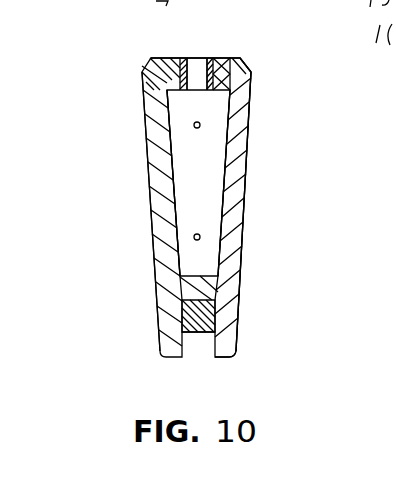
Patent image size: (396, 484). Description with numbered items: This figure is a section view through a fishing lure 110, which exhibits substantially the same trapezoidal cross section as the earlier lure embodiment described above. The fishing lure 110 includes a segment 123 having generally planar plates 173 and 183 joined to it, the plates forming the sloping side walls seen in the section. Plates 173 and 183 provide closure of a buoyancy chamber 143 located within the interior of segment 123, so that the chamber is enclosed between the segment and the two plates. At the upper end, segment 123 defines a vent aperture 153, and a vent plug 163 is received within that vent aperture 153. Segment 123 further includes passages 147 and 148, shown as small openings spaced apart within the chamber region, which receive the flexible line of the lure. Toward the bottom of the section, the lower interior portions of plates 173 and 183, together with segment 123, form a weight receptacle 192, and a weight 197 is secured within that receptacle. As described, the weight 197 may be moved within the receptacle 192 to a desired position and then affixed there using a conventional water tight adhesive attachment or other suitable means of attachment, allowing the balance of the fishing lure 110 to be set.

The fishing lure 110 is at (118, 220).
The segment 123 is at (250, 98).
The buoyancy chamber 143 is at (205, 160).
The passage 147 is at (194, 127).
The passage 148 is at (192, 239).
The vent aperture 153 is at (233, 74).
The vent plug 163 is at (198, 65).
The plate 173 is at (149, 172).
The plate 183 is at (238, 256).
The weight receptacle 192 is at (207, 332).
The weight 197 is at (187, 332).